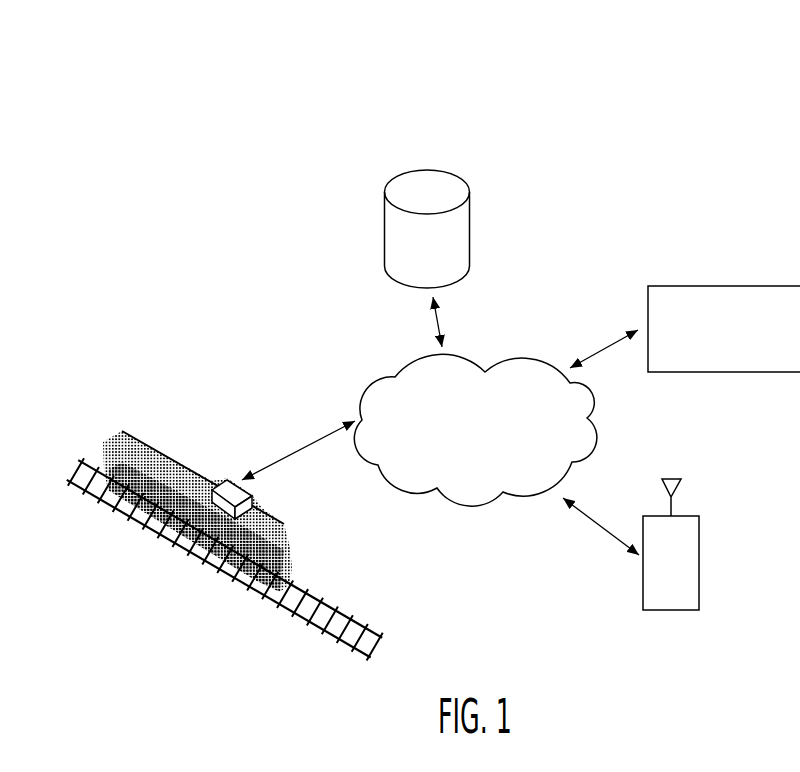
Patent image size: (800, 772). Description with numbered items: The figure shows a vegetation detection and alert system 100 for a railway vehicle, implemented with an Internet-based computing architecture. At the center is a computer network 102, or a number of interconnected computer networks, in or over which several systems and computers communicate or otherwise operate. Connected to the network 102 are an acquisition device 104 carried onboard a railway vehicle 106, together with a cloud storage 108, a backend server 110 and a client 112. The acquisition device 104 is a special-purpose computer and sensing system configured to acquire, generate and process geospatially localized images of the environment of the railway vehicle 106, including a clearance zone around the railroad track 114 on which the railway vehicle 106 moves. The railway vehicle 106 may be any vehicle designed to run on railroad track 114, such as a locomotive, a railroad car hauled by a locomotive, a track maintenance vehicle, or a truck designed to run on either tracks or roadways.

The vegetation detection and alert system 100 is at (338, 75).
The computer network 102 is at (532, 444).
The acquisition device 104 is at (231, 478).
The railway vehicle 106 is at (155, 450).
The cloud storage 108 is at (385, 214).
The backend server 110 is at (727, 286).
The client 112 is at (687, 515).
The railroad track 114 is at (318, 625).